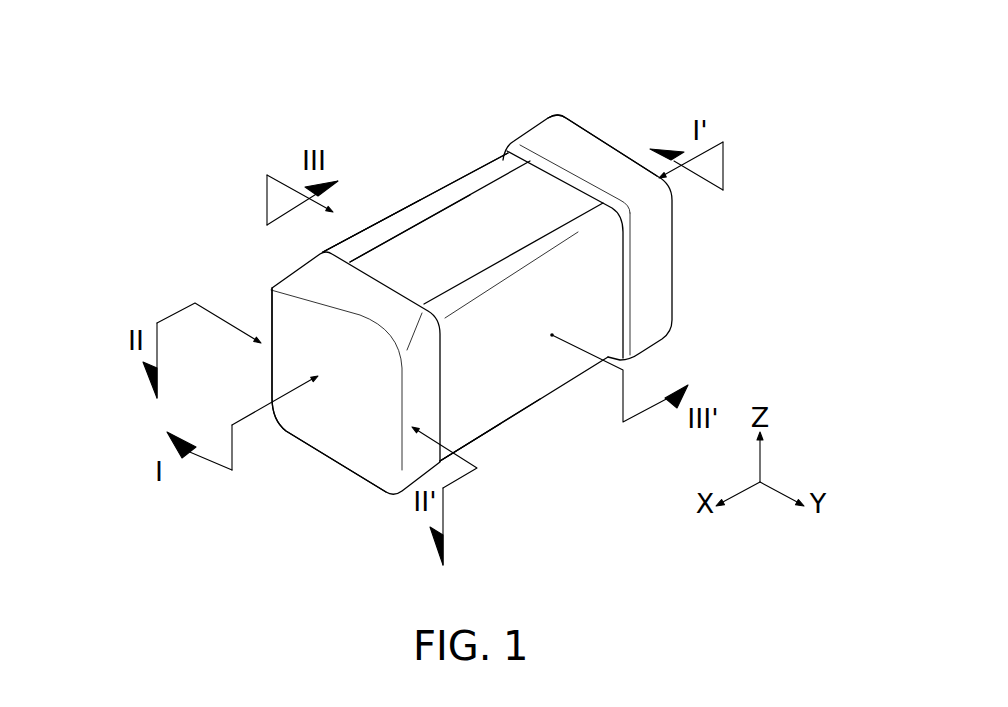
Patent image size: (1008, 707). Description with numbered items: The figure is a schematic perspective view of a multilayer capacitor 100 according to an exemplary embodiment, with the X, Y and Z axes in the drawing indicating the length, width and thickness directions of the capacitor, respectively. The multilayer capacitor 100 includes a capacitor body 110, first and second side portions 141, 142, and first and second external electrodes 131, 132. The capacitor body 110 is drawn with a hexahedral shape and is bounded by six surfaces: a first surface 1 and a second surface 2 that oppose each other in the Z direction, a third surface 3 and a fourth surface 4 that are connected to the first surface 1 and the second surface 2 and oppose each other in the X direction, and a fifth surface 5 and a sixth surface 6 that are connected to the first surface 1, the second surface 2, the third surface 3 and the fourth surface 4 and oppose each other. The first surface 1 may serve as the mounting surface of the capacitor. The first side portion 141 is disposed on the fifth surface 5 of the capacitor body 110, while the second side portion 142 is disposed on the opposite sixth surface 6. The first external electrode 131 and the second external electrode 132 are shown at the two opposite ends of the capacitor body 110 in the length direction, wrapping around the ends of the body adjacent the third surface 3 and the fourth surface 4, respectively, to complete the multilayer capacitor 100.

The multilayer capacitor 100 is at (496, 22).
The capacitor body 110 is at (453, 214).
The first side portion 141 is at (468, 220).
The second side portion 142 is at (578, 231).
The first external electrode 131 is at (353, 457).
The second external electrode 132 is at (652, 304).
The first surface 1 is at (473, 378).
The second surface 2 is at (407, 200).
The third surface 3 is at (341, 433).
The fourth surface 4 is at (597, 119).
The fifth surface 5 is at (528, 385).
The sixth surface 6 is at (422, 232).